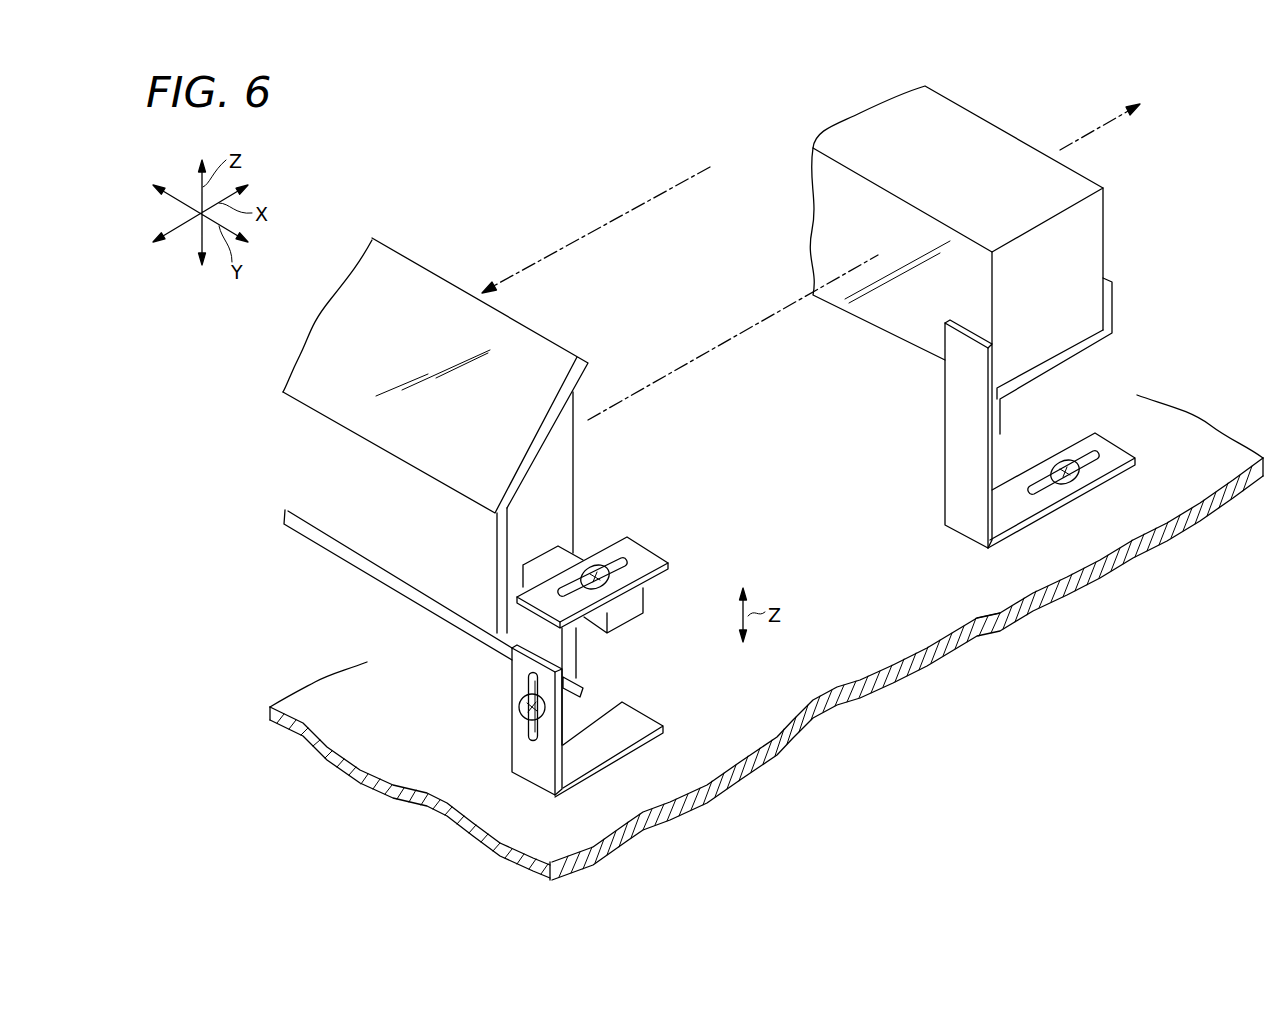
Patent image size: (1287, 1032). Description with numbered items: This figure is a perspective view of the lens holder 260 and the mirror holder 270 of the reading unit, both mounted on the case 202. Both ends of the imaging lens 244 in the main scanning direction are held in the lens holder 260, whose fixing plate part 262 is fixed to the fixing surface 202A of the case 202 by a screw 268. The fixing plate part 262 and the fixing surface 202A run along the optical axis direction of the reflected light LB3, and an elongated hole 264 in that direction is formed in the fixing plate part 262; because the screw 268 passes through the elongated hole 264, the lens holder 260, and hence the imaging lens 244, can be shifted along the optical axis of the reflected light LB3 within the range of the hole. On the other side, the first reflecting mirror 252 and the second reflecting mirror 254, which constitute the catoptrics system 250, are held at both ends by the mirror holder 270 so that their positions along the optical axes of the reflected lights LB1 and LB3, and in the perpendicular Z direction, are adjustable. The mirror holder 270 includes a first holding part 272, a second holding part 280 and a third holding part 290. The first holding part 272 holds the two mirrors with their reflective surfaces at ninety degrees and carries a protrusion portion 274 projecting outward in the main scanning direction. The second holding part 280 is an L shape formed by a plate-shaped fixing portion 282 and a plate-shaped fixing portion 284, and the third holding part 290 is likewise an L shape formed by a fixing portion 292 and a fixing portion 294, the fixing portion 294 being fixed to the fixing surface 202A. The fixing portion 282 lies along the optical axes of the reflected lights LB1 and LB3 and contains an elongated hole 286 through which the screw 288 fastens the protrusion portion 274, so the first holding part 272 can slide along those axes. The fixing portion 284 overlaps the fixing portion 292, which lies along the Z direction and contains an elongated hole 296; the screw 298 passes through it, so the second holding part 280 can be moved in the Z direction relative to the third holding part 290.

The case 202 is at (930, 672).
The fixing surface 202A is at (977, 600).
The imaging lens 244 is at (1000, 152).
The catoptrics system 250 is at (435, 440).
The first reflecting mirror 252 is at (400, 273).
The second reflecting mirror 254 is at (402, 589).
The lens holder 260 is at (1032, 474).
The fixing plate part 262 is at (1015, 512).
The elongated hole 264 is at (1075, 458).
The screw 268 is at (1080, 482).
The mirror holder 270 is at (580, 621).
The first holding part 272 is at (570, 475).
The protrusion portion 274 is at (563, 555).
The second holding part 280 is at (582, 571).
The fixing portion 282 is at (655, 555).
The fixing portion 284 is at (553, 648).
The elongated hole 286 is at (620, 562).
The screw 288 is at (563, 572).
The third holding part 290 is at (534, 746).
The fixing portion 292 is at (515, 690).
The fixing portion 294 is at (592, 750).
The elongated hole 296 is at (528, 677).
The screw 298 is at (524, 712).
The reflected light LB1 is at (692, 176).
The reflected light LB3 is at (1110, 128).